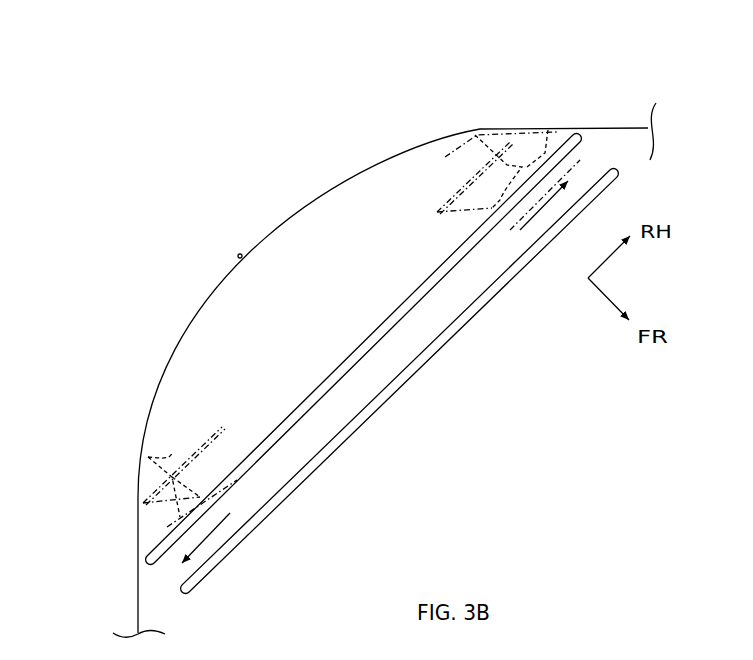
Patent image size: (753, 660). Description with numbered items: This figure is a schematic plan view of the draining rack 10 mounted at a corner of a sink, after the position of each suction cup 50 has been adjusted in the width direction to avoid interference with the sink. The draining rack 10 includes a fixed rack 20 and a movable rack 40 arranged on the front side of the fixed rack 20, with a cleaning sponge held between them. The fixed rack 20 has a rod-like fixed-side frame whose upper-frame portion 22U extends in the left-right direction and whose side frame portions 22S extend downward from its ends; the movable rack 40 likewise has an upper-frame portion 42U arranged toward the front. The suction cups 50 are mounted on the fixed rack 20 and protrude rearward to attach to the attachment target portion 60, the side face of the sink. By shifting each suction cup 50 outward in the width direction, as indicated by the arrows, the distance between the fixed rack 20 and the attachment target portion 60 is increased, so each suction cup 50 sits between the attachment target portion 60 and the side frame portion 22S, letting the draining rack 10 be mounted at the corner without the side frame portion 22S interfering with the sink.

The draining rack 10 is at (505, 433).
The fixed rack 20 is at (386, 306).
The side frame portion 22S is at (575, 133).
The upper-frame portion 22U is at (327, 380).
The movable rack 40 is at (445, 355).
The upper-frame portion 42U is at (367, 420).
The suction cup 50 is at (172, 453).
The attachment target portion 60 is at (238, 257).